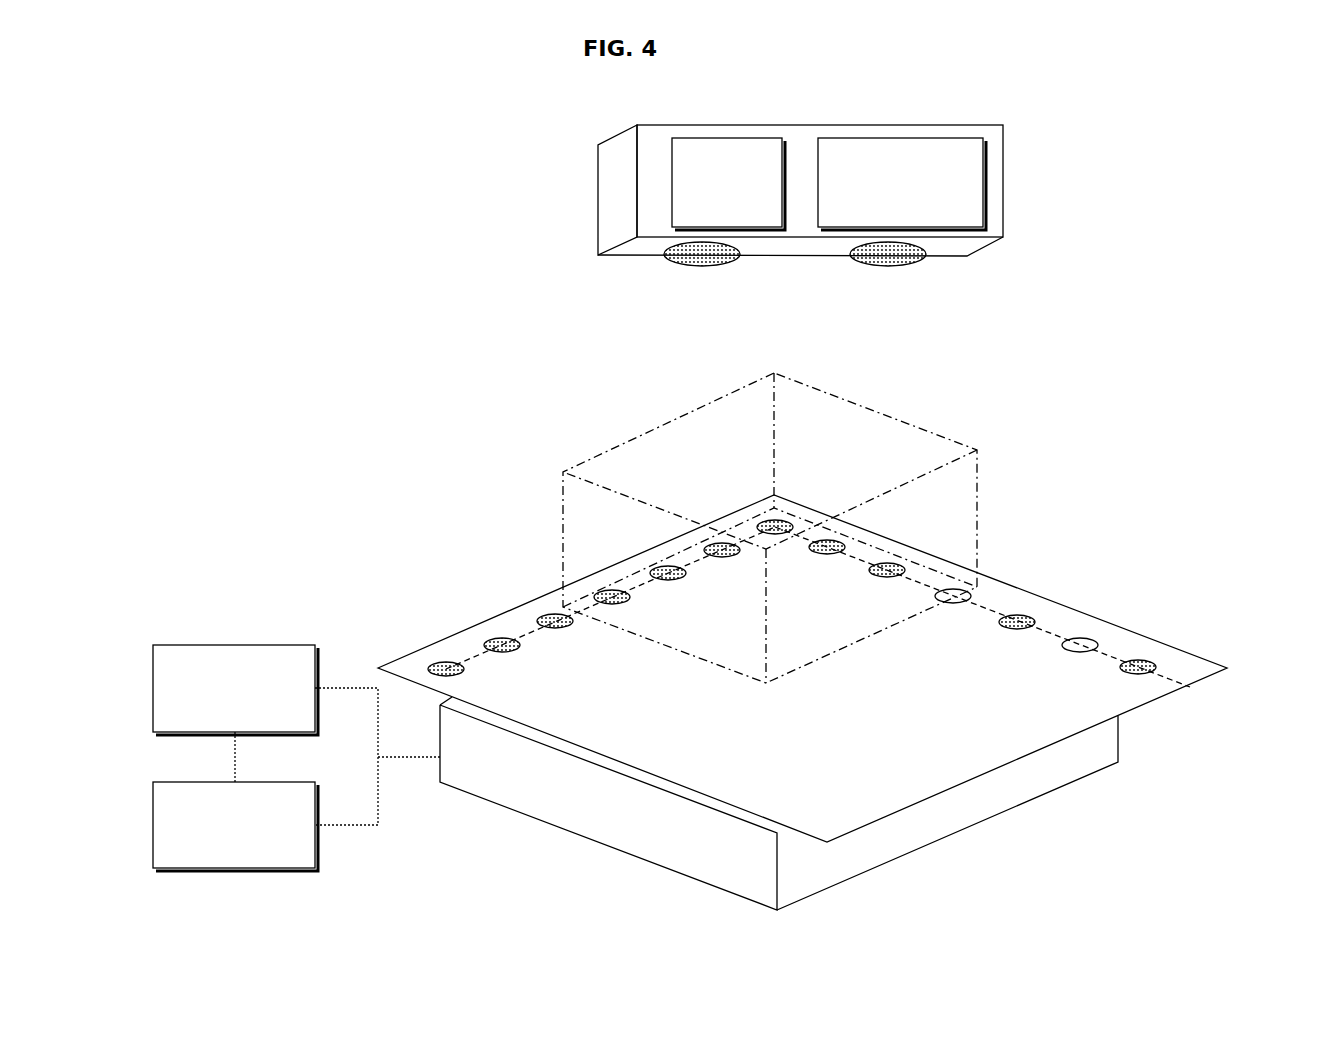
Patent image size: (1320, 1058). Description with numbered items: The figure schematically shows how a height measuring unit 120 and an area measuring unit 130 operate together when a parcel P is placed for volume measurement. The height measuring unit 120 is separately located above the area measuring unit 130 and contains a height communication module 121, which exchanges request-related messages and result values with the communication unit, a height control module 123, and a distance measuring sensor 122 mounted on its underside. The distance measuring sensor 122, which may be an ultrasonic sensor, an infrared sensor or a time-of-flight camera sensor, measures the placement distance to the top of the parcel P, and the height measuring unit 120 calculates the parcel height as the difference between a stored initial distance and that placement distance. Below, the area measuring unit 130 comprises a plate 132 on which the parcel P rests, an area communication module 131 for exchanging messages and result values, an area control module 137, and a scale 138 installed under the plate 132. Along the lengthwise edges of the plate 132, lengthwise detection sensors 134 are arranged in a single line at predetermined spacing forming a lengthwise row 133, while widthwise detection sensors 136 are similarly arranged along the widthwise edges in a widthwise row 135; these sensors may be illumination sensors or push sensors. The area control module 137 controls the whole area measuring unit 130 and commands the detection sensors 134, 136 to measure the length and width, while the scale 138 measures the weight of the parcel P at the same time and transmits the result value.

The height measuring unit 120 is at (1022, 138).
The height communication module 121 is at (941, 138).
The distance measuring sensor 122 is at (698, 264).
The height control module 123 is at (741, 138).
The area measuring unit 130 is at (701, 641).
The area communication module 131 is at (185, 782).
The plate 132 is at (977, 760).
The lengthwise row 133 is at (1130, 660).
The lengthwise detection sensor 134 is at (1081, 638).
The widthwise row 135 is at (470, 661).
The widthwise detection sensor 136 is at (504, 638).
The area control module 137 is at (185, 645).
The scale 138 is at (897, 824).
The parcel P is at (611, 450).